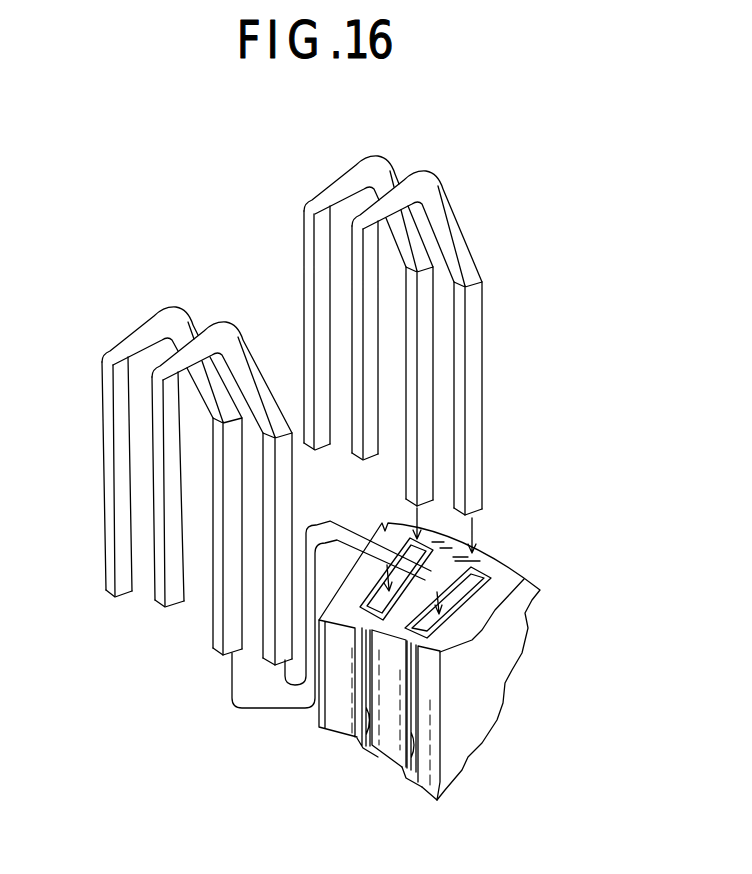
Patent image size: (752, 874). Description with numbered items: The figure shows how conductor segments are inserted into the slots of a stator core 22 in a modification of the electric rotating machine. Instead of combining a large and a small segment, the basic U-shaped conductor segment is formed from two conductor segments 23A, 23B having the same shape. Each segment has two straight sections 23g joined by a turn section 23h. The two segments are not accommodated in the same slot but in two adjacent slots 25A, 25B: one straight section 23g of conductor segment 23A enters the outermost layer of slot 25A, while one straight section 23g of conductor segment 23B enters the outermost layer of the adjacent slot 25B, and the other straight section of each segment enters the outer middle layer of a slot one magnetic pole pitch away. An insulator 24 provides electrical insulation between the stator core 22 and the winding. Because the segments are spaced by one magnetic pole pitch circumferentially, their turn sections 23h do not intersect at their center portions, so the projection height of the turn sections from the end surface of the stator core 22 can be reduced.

The stator core 22 is at (512, 577).
The conductor segment 23A is at (259, 337).
The conductor segment 23B is at (117, 336).
The straight section 23g is at (423, 407).
The turn section 23h is at (360, 166).
The insulator 24 is at (434, 573).
The slot 25A is at (413, 773).
The slot 25B is at (357, 748).